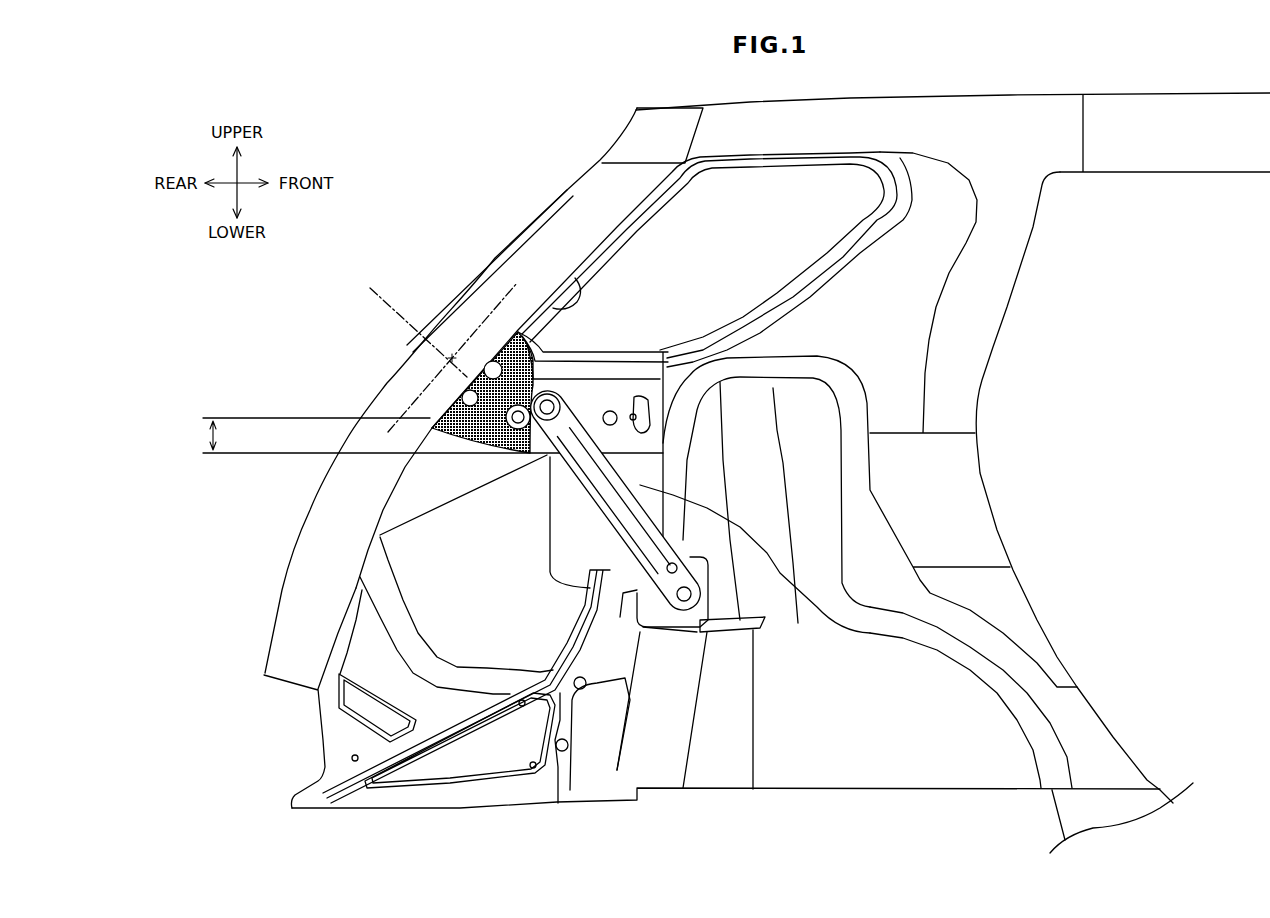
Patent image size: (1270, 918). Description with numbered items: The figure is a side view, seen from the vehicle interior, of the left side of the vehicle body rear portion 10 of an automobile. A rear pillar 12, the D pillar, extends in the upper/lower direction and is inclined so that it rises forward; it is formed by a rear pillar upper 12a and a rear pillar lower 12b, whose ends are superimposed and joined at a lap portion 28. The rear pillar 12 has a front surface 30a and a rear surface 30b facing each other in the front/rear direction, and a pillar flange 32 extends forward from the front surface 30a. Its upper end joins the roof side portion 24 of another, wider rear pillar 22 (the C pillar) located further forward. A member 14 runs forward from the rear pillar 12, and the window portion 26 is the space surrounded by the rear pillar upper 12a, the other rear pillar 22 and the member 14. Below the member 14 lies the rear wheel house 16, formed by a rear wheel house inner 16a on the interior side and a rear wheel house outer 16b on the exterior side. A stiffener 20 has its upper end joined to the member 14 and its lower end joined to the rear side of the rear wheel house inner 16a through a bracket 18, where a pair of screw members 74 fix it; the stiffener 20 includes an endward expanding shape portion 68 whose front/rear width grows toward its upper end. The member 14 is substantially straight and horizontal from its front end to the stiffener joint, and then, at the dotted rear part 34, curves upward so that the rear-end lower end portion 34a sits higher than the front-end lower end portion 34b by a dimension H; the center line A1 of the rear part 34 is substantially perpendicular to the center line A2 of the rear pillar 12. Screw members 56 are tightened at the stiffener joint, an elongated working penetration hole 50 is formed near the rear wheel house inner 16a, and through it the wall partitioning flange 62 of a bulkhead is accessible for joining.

The vehicle body rear portion 10 is at (1112, 81).
The rear pillar 12 is at (382, 383).
The rear pillar upper 12a is at (505, 247).
The rear pillar lower 12b is at (308, 512).
The member 14 is at (625, 347).
The rear wheel house 16 is at (816, 438).
The rear wheel house inner 16a is at (757, 400).
The rear wheel house outer 16b is at (1008, 594).
The bracket 18 is at (677, 608).
The stiffener 20 is at (582, 504).
The other rear pillar 22 is at (1026, 264).
The roof side portion 24 is at (747, 104).
The window portion 26 is at (728, 270).
The lap portion 28 is at (447, 318).
The front surface 30a is at (645, 217).
The rear surface 30b is at (537, 218).
The pillar flange 32 is at (553, 308).
The rear part 34 is at (480, 453).
The rear-end lower end portion 34a is at (432, 423).
The front-end lower end portion 34b is at (527, 460).
The working penetration hole 50 is at (647, 430).
The screw members 56 is at (550, 390).
The wall partitioning flange 62 is at (793, 525).
The endward expanding shape portion 68 is at (588, 412).
The screw members 74 is at (678, 565).
The center line of the rear part A1 is at (372, 290).
The center line of the rear pillar A2 is at (412, 378).
The dimension H is at (423, 435).